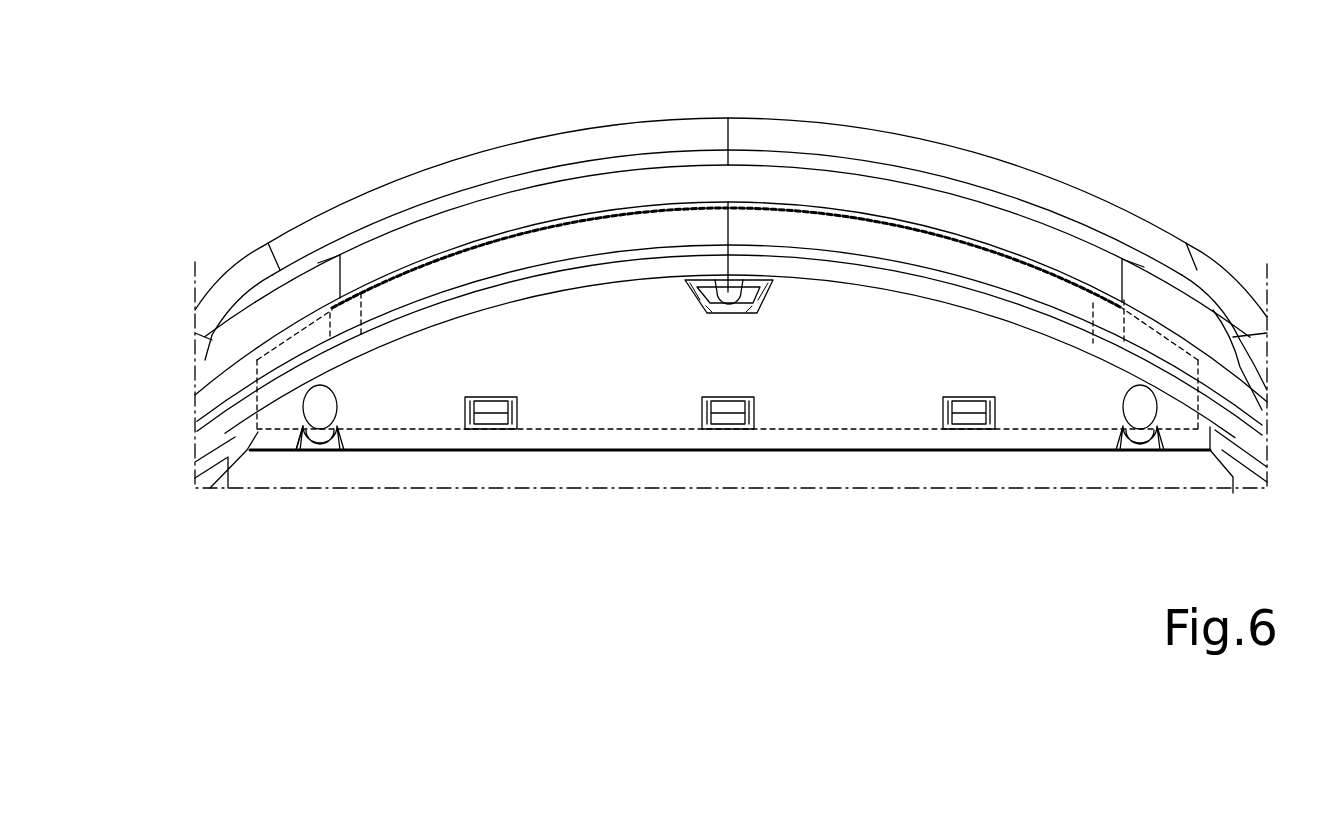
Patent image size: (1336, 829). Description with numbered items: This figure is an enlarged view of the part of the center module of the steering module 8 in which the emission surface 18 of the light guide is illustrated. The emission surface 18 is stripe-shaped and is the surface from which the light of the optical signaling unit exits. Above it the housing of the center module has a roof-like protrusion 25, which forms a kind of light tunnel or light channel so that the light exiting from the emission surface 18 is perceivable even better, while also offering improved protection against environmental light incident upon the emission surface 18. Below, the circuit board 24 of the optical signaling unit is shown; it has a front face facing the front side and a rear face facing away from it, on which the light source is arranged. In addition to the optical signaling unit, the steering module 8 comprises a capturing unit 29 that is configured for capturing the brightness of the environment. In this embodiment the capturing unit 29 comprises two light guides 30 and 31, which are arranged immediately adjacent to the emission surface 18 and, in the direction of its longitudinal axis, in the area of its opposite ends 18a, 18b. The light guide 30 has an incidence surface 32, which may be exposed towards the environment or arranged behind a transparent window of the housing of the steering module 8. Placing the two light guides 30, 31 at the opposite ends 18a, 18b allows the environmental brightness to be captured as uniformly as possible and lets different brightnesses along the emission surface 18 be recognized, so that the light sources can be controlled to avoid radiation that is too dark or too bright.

The steering module 8 is at (611, 453).
The emission surface 18 is at (502, 217).
The first end of the emission surface 18a is at (338, 283).
The second end of the emission surface 18b is at (1124, 280).
The circuit board 24 is at (432, 430).
The roof-like protrusion 25 is at (622, 140).
The capturing unit 29 is at (340, 455).
The light guide 30 is at (318, 433).
The light guide 31 is at (1118, 408).
The incidence surface 32 is at (334, 402).